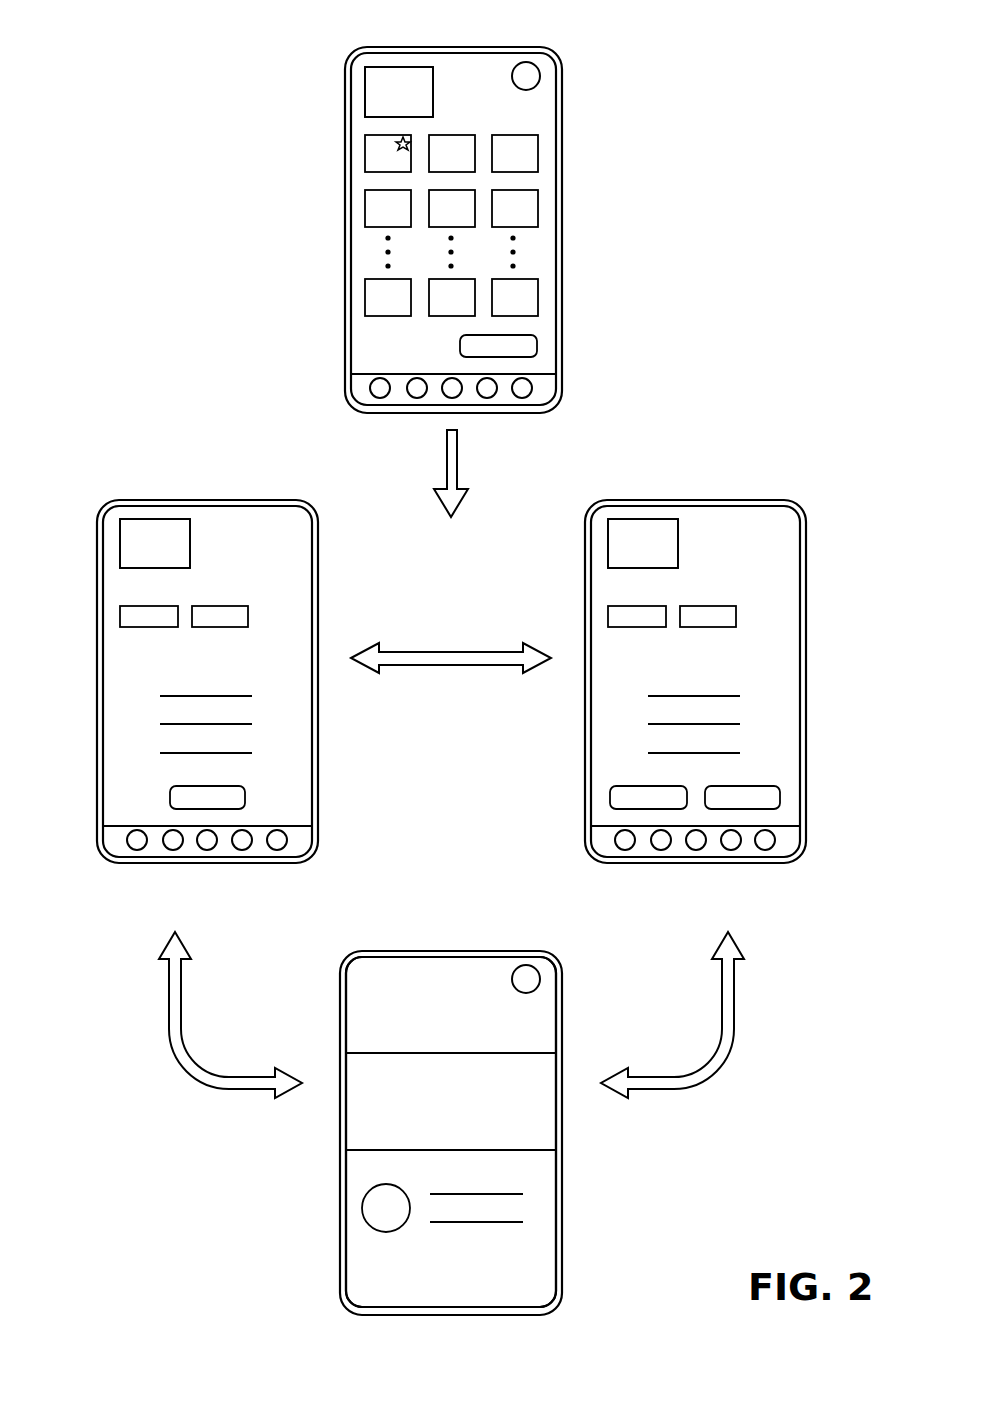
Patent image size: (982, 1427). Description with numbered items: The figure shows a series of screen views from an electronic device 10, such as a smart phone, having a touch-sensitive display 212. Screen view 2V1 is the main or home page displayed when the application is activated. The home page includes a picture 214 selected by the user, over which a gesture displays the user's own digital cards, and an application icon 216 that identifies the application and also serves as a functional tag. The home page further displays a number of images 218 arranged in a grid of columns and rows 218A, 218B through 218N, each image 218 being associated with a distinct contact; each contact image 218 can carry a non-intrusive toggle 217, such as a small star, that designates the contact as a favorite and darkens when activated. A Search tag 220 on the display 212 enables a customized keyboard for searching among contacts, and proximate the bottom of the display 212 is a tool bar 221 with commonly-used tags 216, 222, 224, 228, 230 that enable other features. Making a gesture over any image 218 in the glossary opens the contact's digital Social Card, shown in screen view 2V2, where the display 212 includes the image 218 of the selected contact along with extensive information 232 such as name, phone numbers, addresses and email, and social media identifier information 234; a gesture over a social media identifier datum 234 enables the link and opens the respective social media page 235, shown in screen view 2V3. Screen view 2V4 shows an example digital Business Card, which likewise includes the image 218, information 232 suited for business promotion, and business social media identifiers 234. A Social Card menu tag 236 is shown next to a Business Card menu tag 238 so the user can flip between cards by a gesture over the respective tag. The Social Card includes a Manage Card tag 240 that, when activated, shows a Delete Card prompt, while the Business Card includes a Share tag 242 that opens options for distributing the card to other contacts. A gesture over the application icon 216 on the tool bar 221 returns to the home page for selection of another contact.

The electronic device 10 is at (397, 47).
The display 212 is at (358, 78).
The picture 214 is at (380, 98).
The application icon 216 is at (540, 77).
The toggle 217 is at (410, 140).
The image 218 is at (133, 550).
The row of images 218A is at (359, 152).
The row of images 218B is at (359, 210).
The row of images 218N is at (359, 298).
The Search tag 220 is at (537, 346).
The tool bar 221 is at (355, 384).
The tag 222 is at (413, 395).
The tag 224 is at (452, 388).
The tag 228 is at (487, 388).
The tag 230 is at (522, 388).
The information 232 is at (165, 697).
The social media identifier information 234 is at (245, 724).
The social media page 235 is at (532, 1263).
The Social Card menu tag 236 is at (138, 617).
The Business Card menu tag 238 is at (248, 615).
The Manage Card tag 240 is at (170, 797).
The Share tag 242 is at (780, 797).
The screen view 2V1 is at (648, 135).
The screen view 2V2 is at (348, 566).
The screen view 2V3 is at (593, 1015).
The screen view 2V4 is at (836, 566).